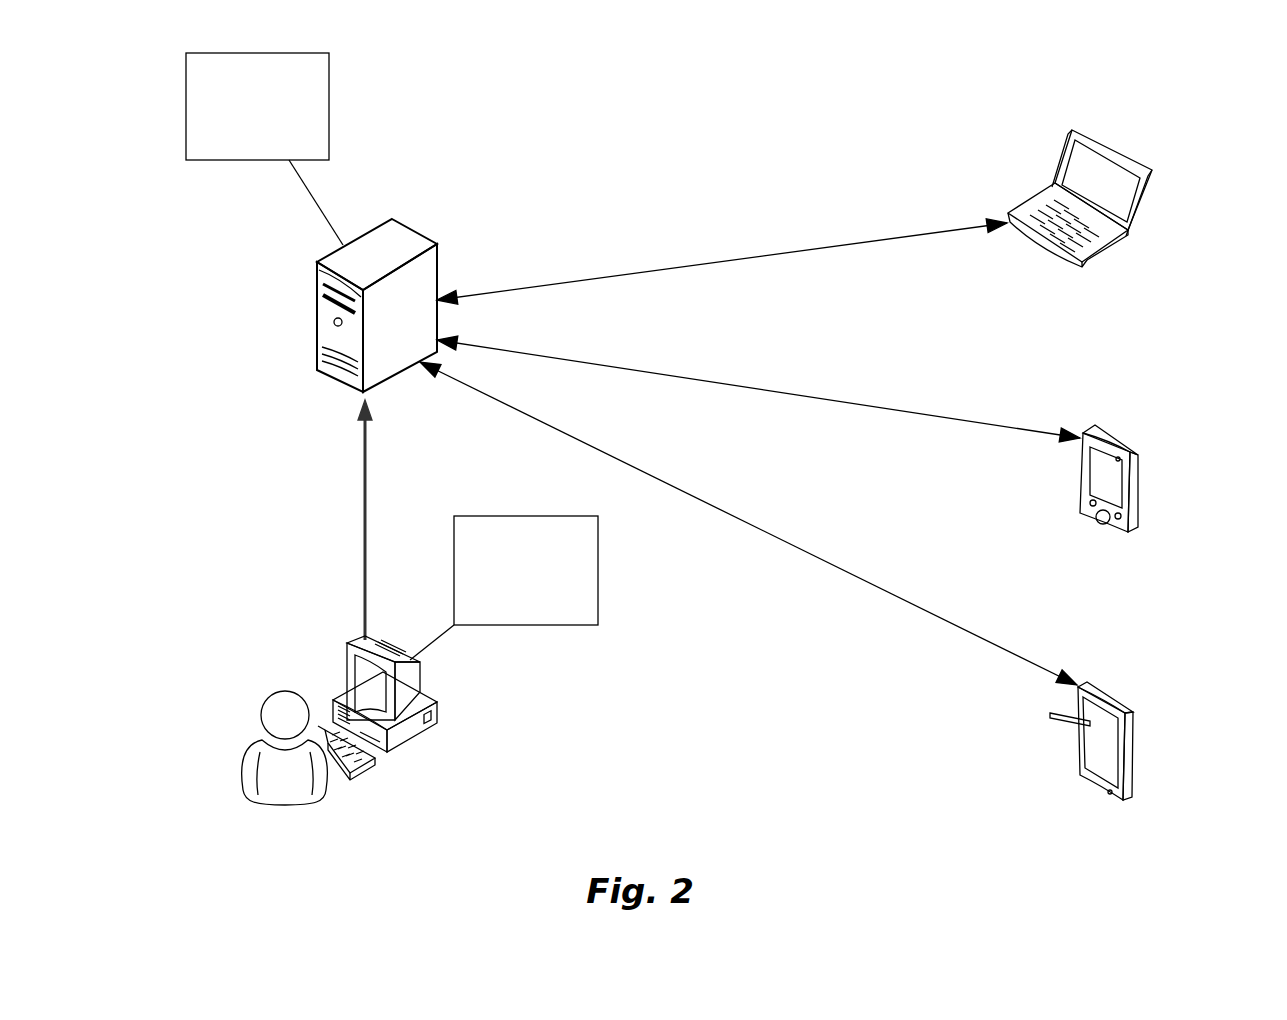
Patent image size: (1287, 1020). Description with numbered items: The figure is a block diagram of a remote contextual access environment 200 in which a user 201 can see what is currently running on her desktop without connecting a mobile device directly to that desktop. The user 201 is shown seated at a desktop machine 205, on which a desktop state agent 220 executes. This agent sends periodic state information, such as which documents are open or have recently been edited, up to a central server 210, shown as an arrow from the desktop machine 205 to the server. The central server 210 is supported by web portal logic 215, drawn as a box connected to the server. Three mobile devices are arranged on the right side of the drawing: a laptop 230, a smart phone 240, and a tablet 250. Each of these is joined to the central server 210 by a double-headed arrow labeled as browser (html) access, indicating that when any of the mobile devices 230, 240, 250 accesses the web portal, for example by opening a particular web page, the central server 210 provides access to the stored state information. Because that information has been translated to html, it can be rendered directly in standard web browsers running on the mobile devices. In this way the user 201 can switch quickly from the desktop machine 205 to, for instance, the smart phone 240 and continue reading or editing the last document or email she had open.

The remote contextual access environment 200 is at (875, 98).
The user 201 is at (260, 795).
The desktop machine 205 is at (347, 642).
The central server 210 is at (437, 272).
The web portal logic 215 is at (329, 110).
The desktop state agent 220 is at (523, 625).
The laptop 230 is at (1147, 205).
The smart phone 240 is at (1140, 462).
The tablet 250 is at (1133, 737).